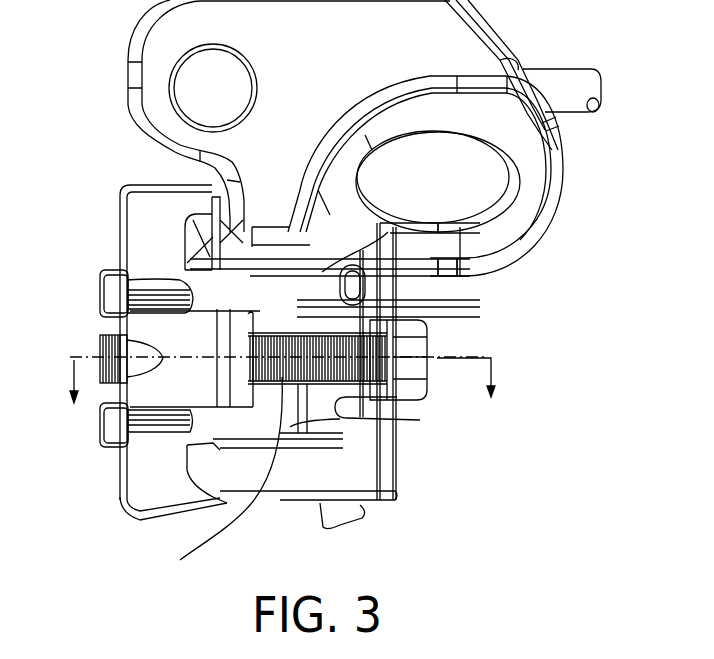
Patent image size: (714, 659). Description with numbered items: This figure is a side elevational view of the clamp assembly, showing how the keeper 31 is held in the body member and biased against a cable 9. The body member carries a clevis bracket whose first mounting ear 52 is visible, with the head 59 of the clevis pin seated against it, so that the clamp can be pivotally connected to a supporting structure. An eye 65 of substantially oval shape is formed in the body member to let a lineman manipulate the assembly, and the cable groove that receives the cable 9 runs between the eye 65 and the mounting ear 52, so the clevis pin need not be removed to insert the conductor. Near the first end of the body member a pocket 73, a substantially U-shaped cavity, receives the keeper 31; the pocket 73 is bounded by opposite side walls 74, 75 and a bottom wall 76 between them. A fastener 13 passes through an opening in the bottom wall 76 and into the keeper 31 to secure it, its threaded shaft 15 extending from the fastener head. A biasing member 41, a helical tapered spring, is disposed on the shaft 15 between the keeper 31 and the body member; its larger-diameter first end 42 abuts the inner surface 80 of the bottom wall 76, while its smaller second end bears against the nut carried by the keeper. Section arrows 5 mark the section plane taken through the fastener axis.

The first mounting ear 52 is at (134, 42).
The head 59 is at (257, 88).
The cable 9 is at (555, 69).
The eye 65 is at (520, 208).
The inner surface 80 is at (340, 282).
The first end 42 is at (356, 301).
The keeper 31 is at (208, 302).
The biasing member 41 is at (280, 328).
The fastener 13 is at (432, 345).
The side wall 74 is at (393, 315).
The section line 5- 5 is at (281, 397).
The pocket 73 is at (273, 437).
The bottom wall 76 is at (393, 418).
The side wall 75 is at (347, 405).
The threaded shaft 15 is at (224, 482).